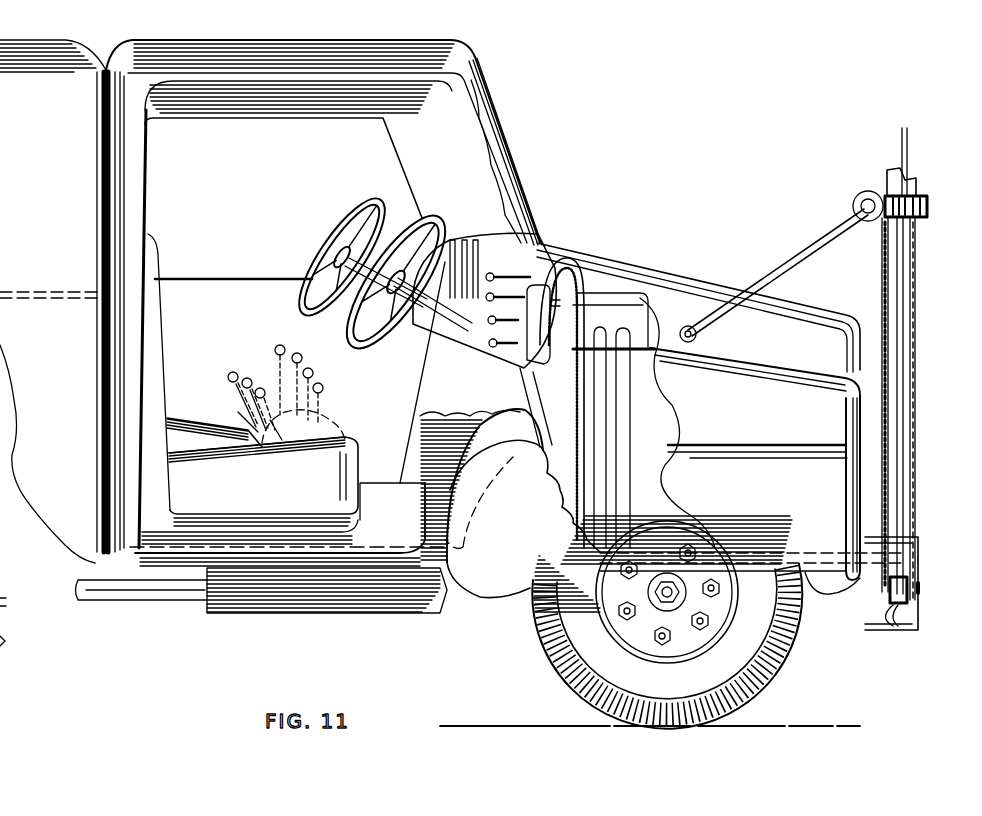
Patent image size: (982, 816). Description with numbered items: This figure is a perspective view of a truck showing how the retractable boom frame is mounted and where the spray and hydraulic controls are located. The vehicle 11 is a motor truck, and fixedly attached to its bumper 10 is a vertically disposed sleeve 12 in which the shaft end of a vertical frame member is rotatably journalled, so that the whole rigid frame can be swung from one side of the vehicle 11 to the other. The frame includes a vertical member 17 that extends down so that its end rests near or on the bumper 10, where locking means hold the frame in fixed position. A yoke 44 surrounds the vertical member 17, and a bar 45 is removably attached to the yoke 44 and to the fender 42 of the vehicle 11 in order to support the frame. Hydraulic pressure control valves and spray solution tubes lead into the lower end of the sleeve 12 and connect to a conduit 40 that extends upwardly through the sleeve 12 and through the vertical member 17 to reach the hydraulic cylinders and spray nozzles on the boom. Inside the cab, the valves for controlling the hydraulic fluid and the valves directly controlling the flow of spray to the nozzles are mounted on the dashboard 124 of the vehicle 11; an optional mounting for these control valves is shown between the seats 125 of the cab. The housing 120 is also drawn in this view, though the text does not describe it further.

The bumper 10 is at (918, 614).
The vehicle 11 is at (197, 50).
The sleeve 12 is at (513, 260).
The vertical member 17 is at (890, 180).
The conduit 40 is at (913, 372).
The fender 42 is at (822, 431).
The yoke 44 is at (927, 210).
The bar 45 is at (813, 247).
The housing 120 is at (633, 318).
The dashboard 124 is at (557, 247).
The seats 125 is at (297, 430).